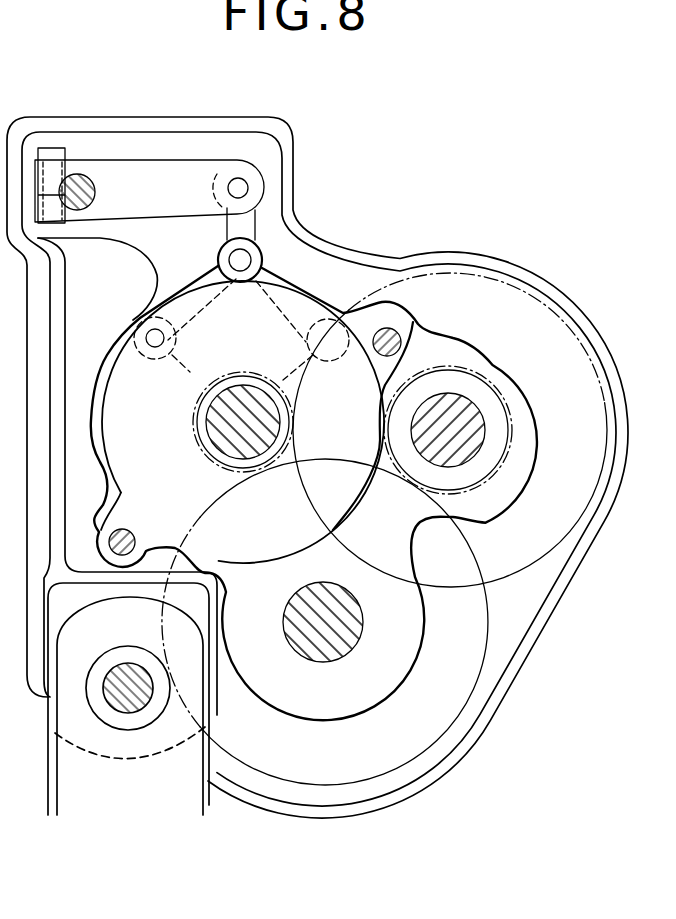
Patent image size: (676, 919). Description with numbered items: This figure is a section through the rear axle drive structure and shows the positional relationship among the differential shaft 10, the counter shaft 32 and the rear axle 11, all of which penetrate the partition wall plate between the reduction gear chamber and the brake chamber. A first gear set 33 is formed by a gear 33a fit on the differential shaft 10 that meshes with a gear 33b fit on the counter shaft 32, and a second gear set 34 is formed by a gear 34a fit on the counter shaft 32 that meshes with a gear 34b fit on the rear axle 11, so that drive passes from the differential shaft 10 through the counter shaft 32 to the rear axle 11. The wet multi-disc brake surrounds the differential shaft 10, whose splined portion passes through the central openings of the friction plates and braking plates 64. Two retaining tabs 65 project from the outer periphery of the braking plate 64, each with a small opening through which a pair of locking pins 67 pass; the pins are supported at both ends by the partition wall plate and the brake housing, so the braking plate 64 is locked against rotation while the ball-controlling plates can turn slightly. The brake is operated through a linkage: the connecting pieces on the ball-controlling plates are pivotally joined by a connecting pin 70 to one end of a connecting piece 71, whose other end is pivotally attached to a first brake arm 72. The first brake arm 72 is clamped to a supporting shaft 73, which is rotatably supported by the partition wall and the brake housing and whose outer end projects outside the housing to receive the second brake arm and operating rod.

The differential shaft 10 is at (215, 425).
The rear axle 11 is at (311, 658).
The counter shaft 32 is at (484, 432).
The gear 33 is at (287, 380).
The gear 33a is at (223, 372).
The gear 33b is at (312, 512).
The ring gear 34 is at (512, 639).
The gear 34a is at (500, 478).
The gear 34b is at (490, 600).
The braking plate 64 is at (207, 273).
The retaining tabs 65 is at (417, 345).
The locking pins 67 is at (399, 336).
The connecting pin 70 is at (240, 272).
The connecting piece 71 is at (253, 220).
The first brake arm 72 is at (170, 163).
The supporting shaft 73 is at (79, 175).